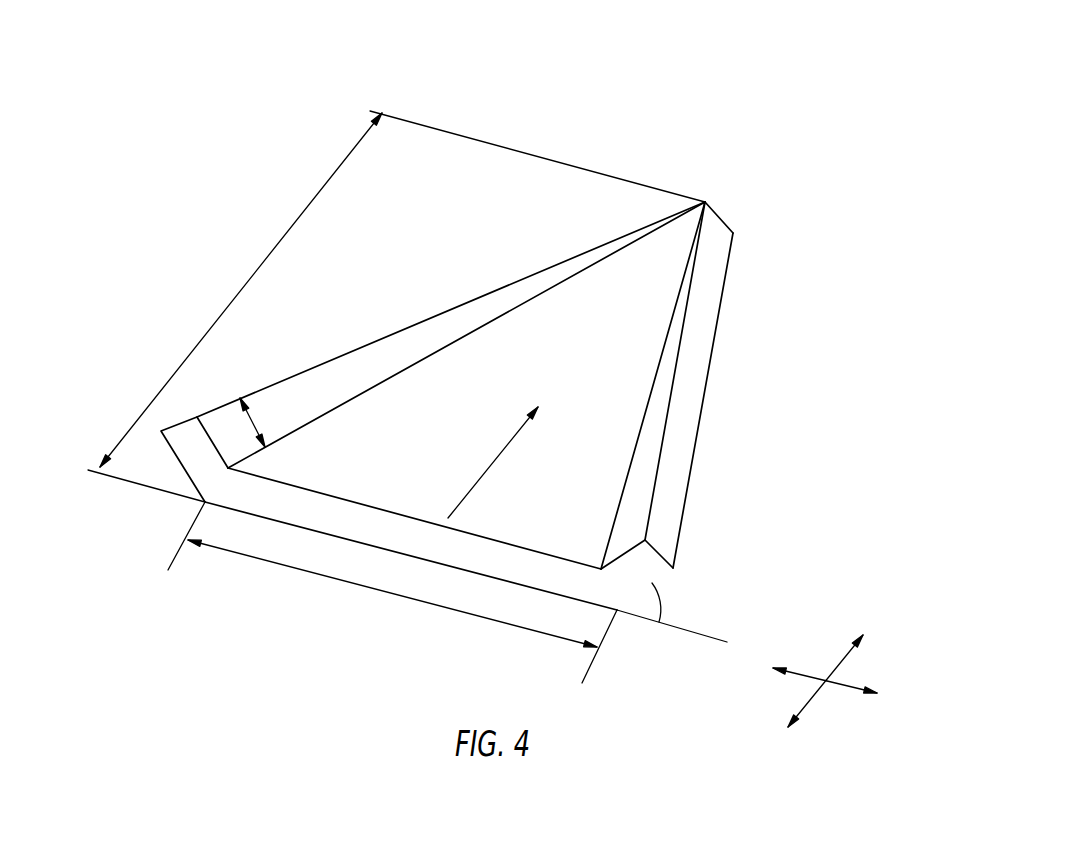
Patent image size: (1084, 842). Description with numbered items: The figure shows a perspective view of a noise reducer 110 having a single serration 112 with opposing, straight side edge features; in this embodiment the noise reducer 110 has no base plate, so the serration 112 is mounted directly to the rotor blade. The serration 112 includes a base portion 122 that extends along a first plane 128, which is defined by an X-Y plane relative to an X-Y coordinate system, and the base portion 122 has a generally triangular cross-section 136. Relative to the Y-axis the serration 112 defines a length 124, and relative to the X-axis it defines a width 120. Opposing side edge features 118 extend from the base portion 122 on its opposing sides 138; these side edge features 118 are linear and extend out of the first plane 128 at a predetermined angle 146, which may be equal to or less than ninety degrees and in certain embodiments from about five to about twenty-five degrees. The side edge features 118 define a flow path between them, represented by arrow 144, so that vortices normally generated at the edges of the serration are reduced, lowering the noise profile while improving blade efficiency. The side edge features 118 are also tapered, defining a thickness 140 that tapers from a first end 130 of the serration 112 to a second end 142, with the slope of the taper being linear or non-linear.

The noise reducer 110 is at (128, 145).
The serration 112 is at (273, 188).
The side edge feature 118 is at (480, 297).
The width 120 is at (380, 593).
The base portion 122 is at (478, 353).
The length 124 is at (242, 290).
The first plane 128 is at (870, 663).
The first end 130 is at (189, 477).
The triangular cross-section 136 is at (665, 307).
The sides 138 is at (547, 287).
The thickness 140 is at (255, 420).
The second end 142 is at (707, 203).
The flow path arrow 144 is at (492, 462).
The predetermined angle 146 is at (660, 603).